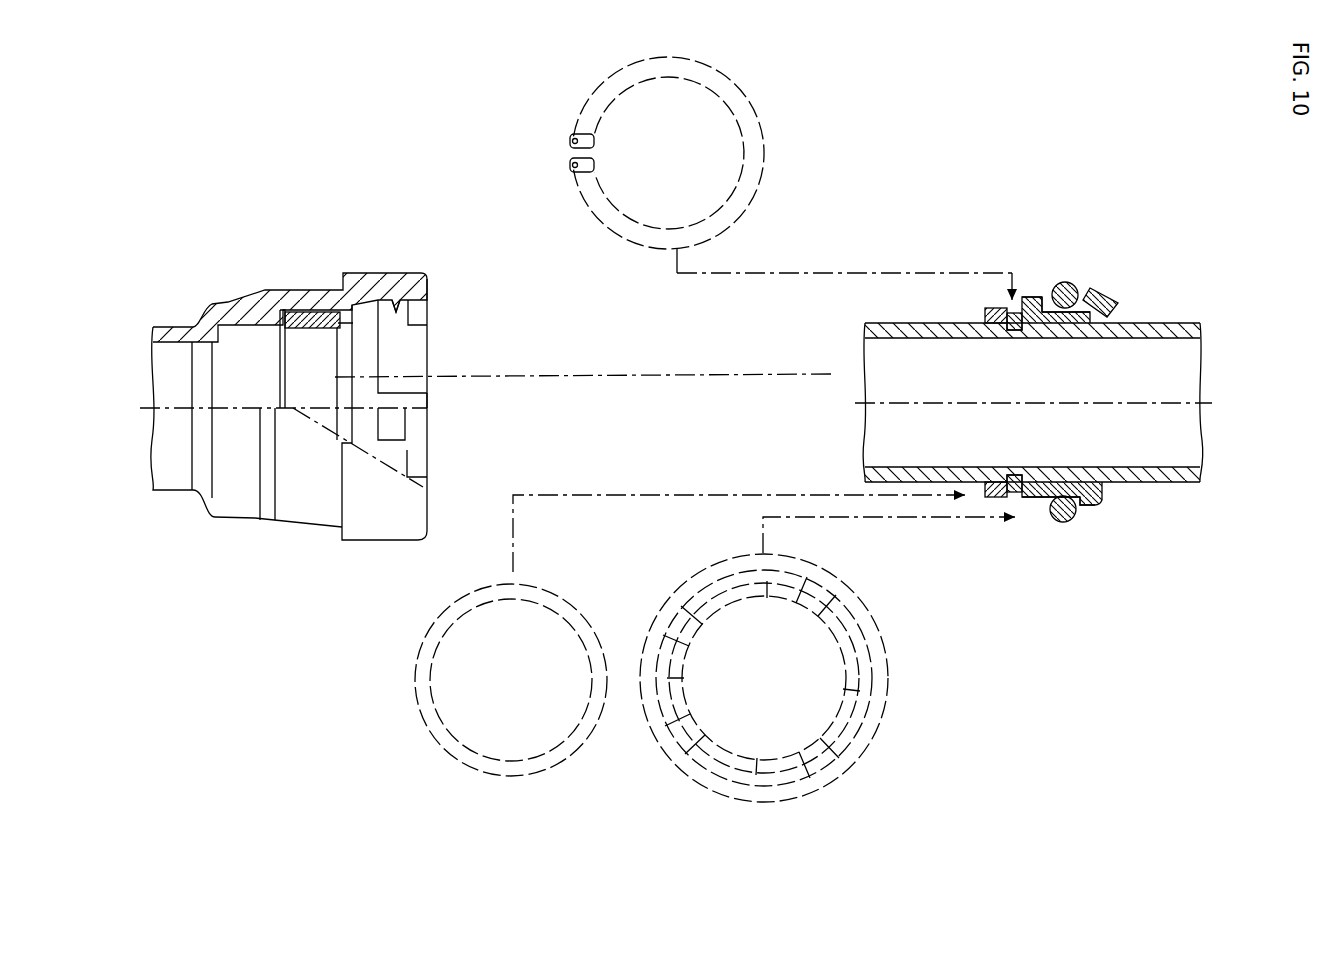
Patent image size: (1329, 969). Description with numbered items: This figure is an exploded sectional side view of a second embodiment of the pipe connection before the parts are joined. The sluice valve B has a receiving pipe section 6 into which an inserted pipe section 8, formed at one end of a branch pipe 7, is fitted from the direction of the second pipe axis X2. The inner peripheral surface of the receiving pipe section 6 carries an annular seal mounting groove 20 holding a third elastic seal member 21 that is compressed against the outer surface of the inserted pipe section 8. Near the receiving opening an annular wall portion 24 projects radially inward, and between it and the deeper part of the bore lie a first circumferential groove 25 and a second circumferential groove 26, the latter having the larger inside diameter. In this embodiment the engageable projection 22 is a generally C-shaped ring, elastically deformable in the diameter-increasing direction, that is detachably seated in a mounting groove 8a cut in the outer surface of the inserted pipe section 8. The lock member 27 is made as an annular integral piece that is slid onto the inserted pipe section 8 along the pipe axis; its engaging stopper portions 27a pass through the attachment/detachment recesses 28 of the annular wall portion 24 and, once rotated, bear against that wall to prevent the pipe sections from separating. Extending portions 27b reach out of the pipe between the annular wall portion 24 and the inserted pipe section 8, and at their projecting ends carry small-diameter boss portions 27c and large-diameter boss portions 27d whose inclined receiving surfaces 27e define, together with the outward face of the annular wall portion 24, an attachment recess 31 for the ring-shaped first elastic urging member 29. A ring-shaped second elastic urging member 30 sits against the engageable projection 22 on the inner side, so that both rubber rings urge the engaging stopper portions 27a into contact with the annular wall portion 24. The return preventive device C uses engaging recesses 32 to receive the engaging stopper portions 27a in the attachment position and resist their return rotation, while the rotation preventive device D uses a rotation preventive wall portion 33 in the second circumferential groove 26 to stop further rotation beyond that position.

The receiving pipe section 6 is at (297, 288).
The branch pipe 7 is at (1177, 323).
The inserted pipe section 8 is at (897, 323).
The mounting groove 8a is at (1012, 312).
The seal mounting groove 20 is at (329, 377).
The third elastic seal member 21 is at (297, 327).
The engageable projection 22 is at (765, 152).
The annular wall portion 24 is at (417, 290).
The first circumferential groove 25 is at (347, 318).
The second circumferential groove 26 is at (383, 297).
The lock member 27 is at (1107, 495).
The engaging stopper portions 27a is at (1047, 288).
The extending portions 27b is at (1057, 338).
The small-diameter boss portions 27c is at (768, 583).
The large-diameter boss portions 27d is at (1107, 300).
The receiving surfaces 27e is at (1087, 287).
The attachment/detachment recesses 28 is at (417, 315).
The first elastic urging member 29 is at (1065, 282).
The second elastic urging member 30 is at (553, 593).
The attachment recess 31 is at (1027, 293).
The engaging recesses 32 is at (402, 448).
The rotation preventive wall portion 33 is at (427, 398).
The sluice valve B is at (165, 325).
The return preventive device C is at (400, 432).
The rotation preventive device D is at (432, 413).
The second pipe axis X2 is at (1110, 400).